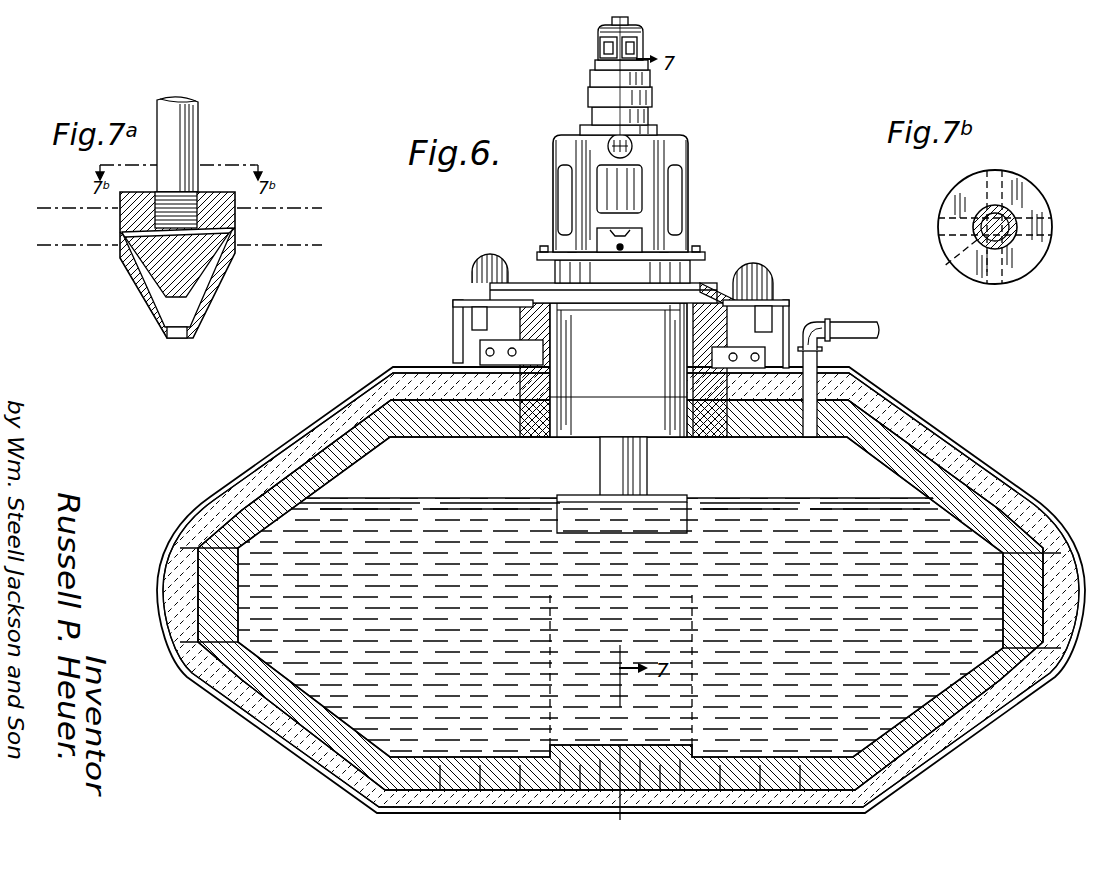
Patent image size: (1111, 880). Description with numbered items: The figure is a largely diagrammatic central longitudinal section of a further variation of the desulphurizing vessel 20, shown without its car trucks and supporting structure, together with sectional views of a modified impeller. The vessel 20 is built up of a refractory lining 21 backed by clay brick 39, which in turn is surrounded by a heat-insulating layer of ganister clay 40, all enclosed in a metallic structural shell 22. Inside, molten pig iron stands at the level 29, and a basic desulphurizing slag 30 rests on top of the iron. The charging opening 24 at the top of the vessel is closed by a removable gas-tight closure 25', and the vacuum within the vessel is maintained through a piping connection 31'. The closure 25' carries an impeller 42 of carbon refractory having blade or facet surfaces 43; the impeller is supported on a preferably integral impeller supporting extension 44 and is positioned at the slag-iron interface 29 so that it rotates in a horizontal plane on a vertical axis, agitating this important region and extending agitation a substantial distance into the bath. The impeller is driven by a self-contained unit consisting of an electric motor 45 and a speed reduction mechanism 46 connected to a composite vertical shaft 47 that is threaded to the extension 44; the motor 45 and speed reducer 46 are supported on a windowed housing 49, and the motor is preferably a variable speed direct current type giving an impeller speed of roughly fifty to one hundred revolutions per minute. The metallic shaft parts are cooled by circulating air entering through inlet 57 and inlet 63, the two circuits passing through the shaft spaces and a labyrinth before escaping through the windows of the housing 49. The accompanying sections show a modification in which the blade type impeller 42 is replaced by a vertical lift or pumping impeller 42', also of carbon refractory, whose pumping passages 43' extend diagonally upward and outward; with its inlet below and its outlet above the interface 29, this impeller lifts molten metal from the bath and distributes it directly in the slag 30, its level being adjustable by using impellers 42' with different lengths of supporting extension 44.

In FIG. 6, the desulphurizing vessel 20 is at (936, 436).
In FIG. 6, the refractory lining 21 is at (310, 750).
In FIG. 6, the metallic structural shell 22 is at (218, 492).
In FIG. 6, the charging opening 24 is at (569, 445).
In FIG. 6, the removable gas-tight closure 25' is at (726, 270).
In FIG. 6, the level of molten pig iron 29 is at (752, 520).
In FIG. 7A, the level of molten pig iron 29 is at (60, 245).
In FIG. 6, the basic desulphurizing slag 30 is at (811, 447).
In FIG. 7A, the basic desulphurizing slag 30 is at (60, 208).
In FIG. 6, the piping connection 31' is at (845, 367).
In FIG. 6, the clay brick 39 is at (833, 395).
In FIG. 6, the heat-insulating layer of ganister clay 40 is at (395, 368).
In FIG. 6, the impeller 42 is at (622, 484).
In FIG. 6, the blade or facet surfaces 43 is at (642, 502).
In FIG. 6, the impeller supporting extension 44 is at (630, 460).
In FIG. 7A, the impeller supporting extension 44 is at (185, 137).
In FIG. 7B, the impeller supporting extension 44 is at (1000, 248).
In FIG. 6, the electric motor 45 is at (632, 45).
In FIG. 6, the speed reduction mechanism 46 is at (646, 93).
In FIG. 6, the composite vertical shaft 47 is at (625, 190).
In FIG. 6, the windowed housing 49 is at (556, 140).
In FIG. 6, the inlet 57 is at (624, 247).
In FIG. 6, the inlet 63 is at (642, 233).
In FIG. 7A, the pumping impeller 42' is at (197, 244).
In FIG. 7B, the pumping impeller 42' is at (1022, 244).
In FIG. 7A, the pumping passages 43' is at (193, 265).
In FIG. 7B, the pumping passages 43' is at (1019, 227).